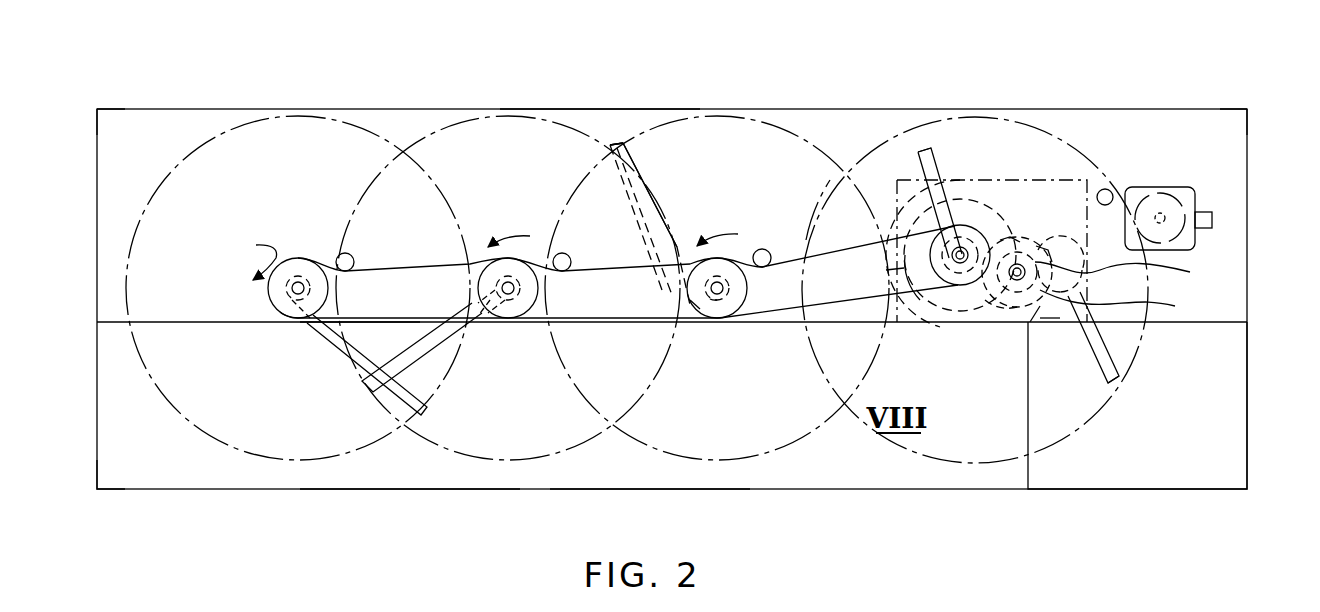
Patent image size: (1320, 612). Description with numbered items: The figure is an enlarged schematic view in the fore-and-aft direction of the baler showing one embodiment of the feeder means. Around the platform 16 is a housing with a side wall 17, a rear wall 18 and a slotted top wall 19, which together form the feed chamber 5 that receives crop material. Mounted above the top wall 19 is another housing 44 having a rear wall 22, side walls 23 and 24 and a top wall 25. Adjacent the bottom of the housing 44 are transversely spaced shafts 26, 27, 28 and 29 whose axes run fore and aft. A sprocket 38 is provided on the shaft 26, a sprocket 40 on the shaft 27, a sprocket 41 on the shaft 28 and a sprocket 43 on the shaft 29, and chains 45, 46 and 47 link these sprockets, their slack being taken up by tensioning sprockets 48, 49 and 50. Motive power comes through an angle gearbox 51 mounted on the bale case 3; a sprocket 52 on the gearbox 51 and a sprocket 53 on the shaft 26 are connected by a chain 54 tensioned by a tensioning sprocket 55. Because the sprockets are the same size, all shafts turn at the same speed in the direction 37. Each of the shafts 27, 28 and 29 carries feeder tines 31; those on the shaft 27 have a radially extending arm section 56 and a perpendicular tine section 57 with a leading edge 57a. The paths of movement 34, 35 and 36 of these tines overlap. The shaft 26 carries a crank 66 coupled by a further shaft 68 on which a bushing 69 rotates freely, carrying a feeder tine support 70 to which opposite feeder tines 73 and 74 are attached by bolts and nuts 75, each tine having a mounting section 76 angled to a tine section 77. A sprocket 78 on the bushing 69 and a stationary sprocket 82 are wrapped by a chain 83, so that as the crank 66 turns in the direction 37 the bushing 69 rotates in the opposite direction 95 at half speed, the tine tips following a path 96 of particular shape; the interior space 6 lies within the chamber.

The bale case 3 is at (1134, 491).
The feed chamber 5 is at (414, 492).
The interior space 6 is at (327, 444).
The platform 16 is at (631, 491).
The side wall 17 is at (96, 464).
The rear wall 18 is at (700, 430).
The slotted top wall 19 is at (759, 322).
The rear wall 22 is at (505, 172).
The side wall 23 is at (98, 129).
The side wall 24 is at (1247, 127).
The top wall 25 is at (583, 108).
The shaft 26 is at (950, 330).
The shaft 27 is at (725, 288).
The shaft 28 is at (515, 289).
The shaft 29 is at (289, 290).
The feeder tine 31 is at (330, 334).
The path of movement 34 is at (806, 130).
The path of movement 35 is at (593, 128).
The path of movement 36 is at (165, 187).
The direction of rotation 37 is at (562, 247).
The sprocket 38 is at (916, 324).
The sprocket 40 is at (692, 306).
The sprocket 41 is at (522, 324).
The sprocket 43 is at (290, 316).
The housing 44 is at (244, 104).
The chain 45 is at (850, 312).
The chain 46 is at (609, 265).
The chain 47 is at (422, 264).
The tensioning sprocket 48 is at (764, 250).
The tensioning sprocket 49 is at (566, 255).
The tensioning sprocket 50 is at (350, 255).
The angle gearbox 51 is at (1157, 186).
The sprocket 52 is at (1194, 190).
The sprocket 53 is at (988, 324).
The chain 54 is at (1130, 268).
The tensioning sprocket 55 is at (1098, 194).
The arm section 56 is at (713, 310).
The tine section 57 is at (657, 283).
The leading edge 57a is at (627, 200).
The crank 66 is at (1035, 322).
The shaft 68 is at (1040, 318).
The bushing 69 is at (1022, 250).
The feeder tine support 70 is at (1061, 235).
The feeder tine 73 is at (918, 160).
The feeder tine 74 is at (1120, 368).
The bolts and nuts 75 is at (1120, 304).
The mounting section 76 is at (1074, 270).
The tine section 77 is at (938, 158).
The sprocket 78 is at (1037, 246).
The sprocket 82 is at (977, 236).
The chain 83 is at (1010, 237).
The opposite direction 95 is at (1080, 246).
The path 96 is at (806, 195).